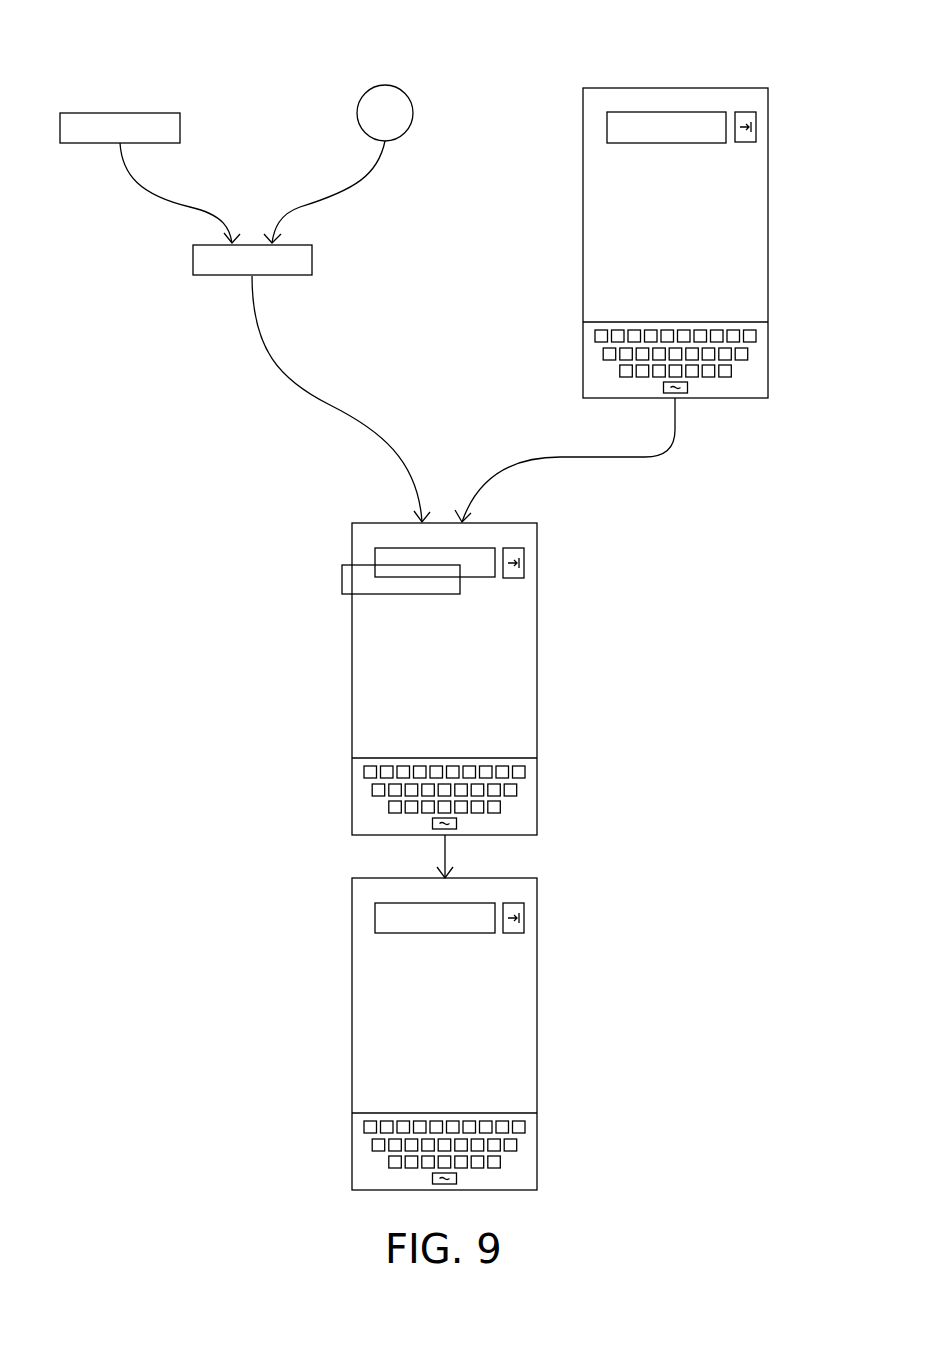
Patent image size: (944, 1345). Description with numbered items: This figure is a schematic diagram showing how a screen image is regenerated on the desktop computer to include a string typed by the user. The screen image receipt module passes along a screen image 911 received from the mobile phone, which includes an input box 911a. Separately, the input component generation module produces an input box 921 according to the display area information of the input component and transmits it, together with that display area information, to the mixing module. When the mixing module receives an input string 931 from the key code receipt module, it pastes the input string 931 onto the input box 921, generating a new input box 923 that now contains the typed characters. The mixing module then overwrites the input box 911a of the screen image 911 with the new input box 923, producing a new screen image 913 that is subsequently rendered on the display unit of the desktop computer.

The input box 921 is at (120, 113).
The input string 931 is at (385, 85).
The new input box 923 is at (193, 256).
The screen image 911 is at (768, 95).
The input box of the screen image 911a is at (710, 112).
The new screen image 913 is at (537, 887).